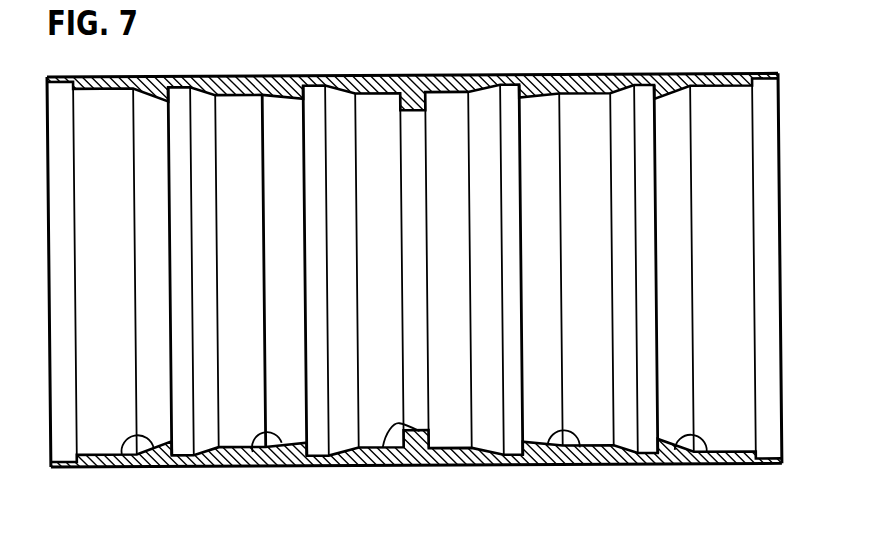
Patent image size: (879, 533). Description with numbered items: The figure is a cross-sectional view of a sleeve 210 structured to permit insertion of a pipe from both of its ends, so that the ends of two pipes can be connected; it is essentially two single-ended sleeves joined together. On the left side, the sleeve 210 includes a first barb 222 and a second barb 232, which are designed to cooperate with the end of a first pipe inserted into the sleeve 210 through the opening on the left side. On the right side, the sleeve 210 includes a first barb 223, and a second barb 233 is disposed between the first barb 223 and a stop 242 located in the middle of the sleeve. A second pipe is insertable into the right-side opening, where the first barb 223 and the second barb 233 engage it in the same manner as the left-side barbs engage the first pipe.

The sleeve 210 is at (632, 77).
The first barb 222 is at (120, 456).
The second barb 232 is at (254, 448).
The stop 242 is at (379, 449).
The second barb 233 is at (576, 450).
The first barb 223 is at (701, 451).